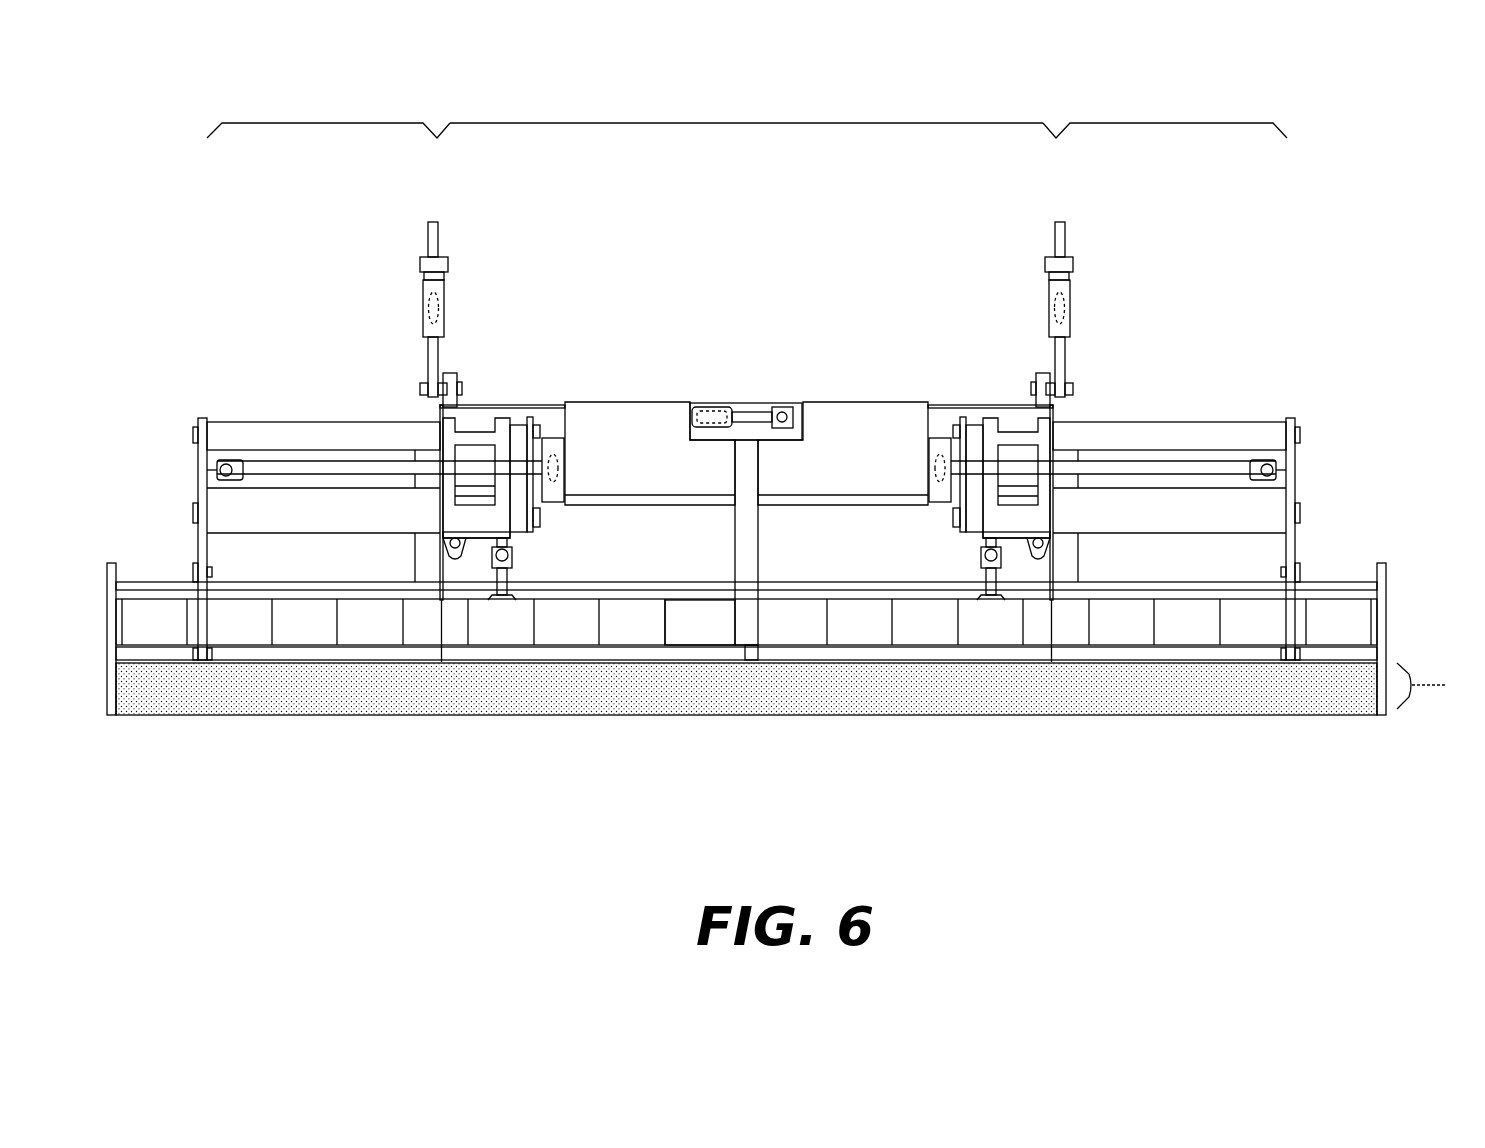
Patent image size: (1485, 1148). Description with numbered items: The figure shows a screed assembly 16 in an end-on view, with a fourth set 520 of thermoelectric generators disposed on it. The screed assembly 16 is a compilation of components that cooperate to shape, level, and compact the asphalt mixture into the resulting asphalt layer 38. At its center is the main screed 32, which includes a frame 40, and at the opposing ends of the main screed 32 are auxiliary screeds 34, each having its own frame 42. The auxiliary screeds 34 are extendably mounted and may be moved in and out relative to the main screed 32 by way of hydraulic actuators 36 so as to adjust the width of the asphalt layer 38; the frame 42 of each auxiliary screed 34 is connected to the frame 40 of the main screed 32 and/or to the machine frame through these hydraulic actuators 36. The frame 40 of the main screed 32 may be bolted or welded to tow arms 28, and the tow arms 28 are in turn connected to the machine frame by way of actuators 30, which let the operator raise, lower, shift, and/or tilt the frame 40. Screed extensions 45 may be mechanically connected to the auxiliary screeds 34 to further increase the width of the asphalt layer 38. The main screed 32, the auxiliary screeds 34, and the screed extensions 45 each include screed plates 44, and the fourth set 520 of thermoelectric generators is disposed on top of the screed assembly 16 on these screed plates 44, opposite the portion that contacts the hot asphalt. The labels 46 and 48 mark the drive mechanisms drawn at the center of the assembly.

The screed assembly 16 is at (220, 252).
The tow arms 28 is at (458, 385).
The actuators 30 is at (430, 356).
The main screed 32 is at (746, 357).
The auxiliary screeds 34 is at (746, 356).
The hydraulic actuators 36 is at (273, 467).
The asphalt layer 38 is at (619, 698).
The frame 40 is at (622, 423).
The frame 42 is at (232, 432).
The screed plates 44 is at (143, 663).
The screed extensions 45 is at (157, 545).
The drive mechanism 46 is at (862, 243).
The drive mechanism 48 is at (550, 242).
The fourth set of thermoelectric generators 520 is at (699, 618).